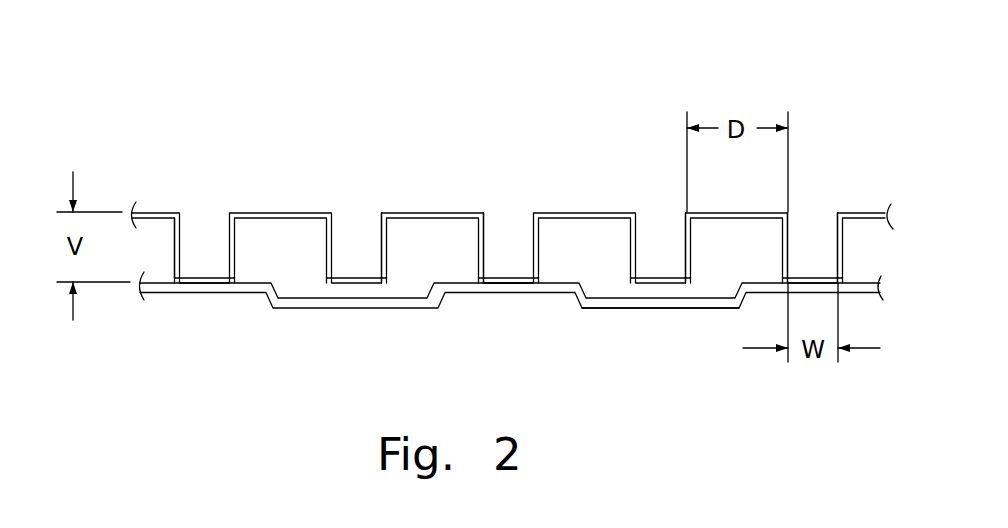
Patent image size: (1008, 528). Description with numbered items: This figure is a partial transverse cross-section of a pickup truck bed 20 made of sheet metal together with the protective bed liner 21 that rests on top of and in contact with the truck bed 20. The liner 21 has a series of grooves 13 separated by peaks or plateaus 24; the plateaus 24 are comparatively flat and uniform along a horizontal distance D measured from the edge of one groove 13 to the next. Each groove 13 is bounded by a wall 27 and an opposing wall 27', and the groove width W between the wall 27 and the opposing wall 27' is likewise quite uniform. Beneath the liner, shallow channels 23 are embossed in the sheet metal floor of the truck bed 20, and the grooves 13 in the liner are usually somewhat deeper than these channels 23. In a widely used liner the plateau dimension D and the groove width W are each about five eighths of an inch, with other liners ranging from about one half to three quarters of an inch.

The protective bed liner 21 is at (522, 205).
The plateau 24 is at (262, 212).
The wall 27 is at (544, 214).
The opposing wall 27' is at (672, 214).
The groove 13 is at (505, 230).
The truck bed 20 is at (313, 322).
The shallow channel 23 is at (602, 300).